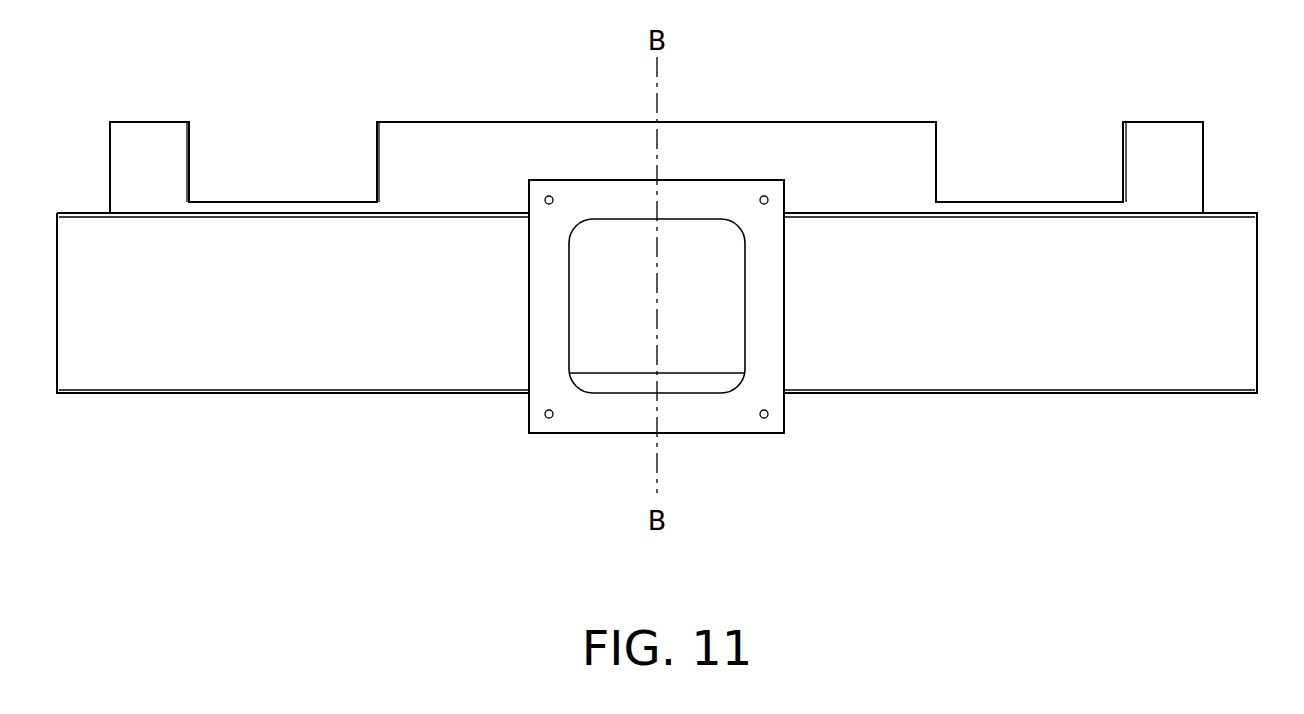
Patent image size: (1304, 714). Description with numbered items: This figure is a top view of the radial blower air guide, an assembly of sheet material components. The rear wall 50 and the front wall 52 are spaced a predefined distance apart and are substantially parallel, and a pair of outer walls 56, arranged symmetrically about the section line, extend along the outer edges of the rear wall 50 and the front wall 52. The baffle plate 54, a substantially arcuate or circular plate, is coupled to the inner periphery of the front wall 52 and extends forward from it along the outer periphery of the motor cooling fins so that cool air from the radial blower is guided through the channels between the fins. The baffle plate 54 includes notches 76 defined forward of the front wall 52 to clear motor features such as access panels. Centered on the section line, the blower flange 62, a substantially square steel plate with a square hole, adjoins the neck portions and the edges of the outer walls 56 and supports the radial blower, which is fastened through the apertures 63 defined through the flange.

The rear wall 50 is at (1217, 395).
The front wall 52 is at (1232, 213).
The baffle plate 54 is at (882, 122).
The outer walls 56 is at (1112, 371).
The blower flange 62 is at (578, 435).
The apertures 63 is at (546, 204).
The notches 76 is at (938, 174).